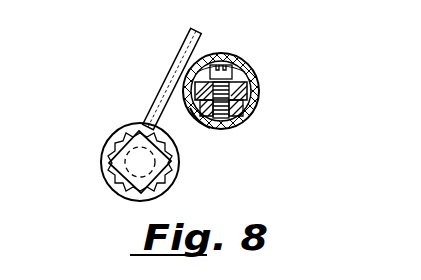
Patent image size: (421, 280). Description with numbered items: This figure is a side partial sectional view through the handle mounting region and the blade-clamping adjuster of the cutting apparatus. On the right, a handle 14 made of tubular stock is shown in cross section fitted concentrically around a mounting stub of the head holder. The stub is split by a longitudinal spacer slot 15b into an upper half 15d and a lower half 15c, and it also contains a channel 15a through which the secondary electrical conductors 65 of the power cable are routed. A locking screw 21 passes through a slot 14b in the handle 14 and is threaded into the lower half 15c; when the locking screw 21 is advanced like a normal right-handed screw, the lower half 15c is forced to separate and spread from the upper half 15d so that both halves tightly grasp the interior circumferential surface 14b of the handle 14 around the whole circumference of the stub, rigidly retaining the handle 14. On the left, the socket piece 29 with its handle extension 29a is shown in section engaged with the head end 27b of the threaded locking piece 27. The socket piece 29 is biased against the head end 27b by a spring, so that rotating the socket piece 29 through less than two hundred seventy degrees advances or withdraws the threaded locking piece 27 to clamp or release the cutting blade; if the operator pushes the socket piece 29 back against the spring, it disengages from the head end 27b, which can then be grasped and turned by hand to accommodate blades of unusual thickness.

The handle 14 is at (256, 82).
The slot / interior circumferential surface of handle 14b is at (203, 127).
The channel 15a is at (255, 97).
The longitudinal spacer slot 15b is at (184, 58).
The lower half of mounting stub 15c is at (245, 118).
The upper half of mounting stub 15d is at (250, 75).
The locking screw 21 is at (221, 118).
The threaded locking piece 27 is at (110, 135).
The head end of threaded locking piece 27b is at (115, 186).
The socket piece 29 is at (103, 153).
The handle extension 29a is at (163, 98).
The secondary electrical conductor 65 is at (221, 62).